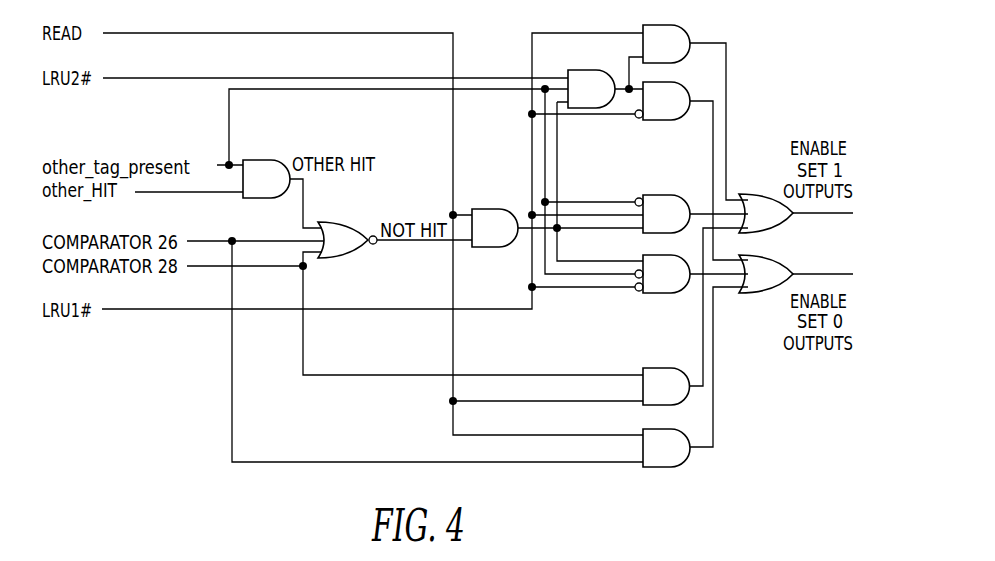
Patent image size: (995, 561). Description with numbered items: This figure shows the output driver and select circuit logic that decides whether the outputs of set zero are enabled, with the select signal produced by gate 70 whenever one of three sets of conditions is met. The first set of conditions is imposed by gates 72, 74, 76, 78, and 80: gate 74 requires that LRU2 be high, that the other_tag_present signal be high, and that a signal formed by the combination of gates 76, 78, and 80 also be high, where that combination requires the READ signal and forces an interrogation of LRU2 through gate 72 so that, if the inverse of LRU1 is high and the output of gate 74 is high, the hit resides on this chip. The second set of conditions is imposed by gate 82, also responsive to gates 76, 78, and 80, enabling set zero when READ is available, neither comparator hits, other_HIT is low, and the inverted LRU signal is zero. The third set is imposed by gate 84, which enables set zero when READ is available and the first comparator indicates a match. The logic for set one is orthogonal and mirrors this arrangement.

The gate 70 is at (770, 294).
The gate 72 is at (677, 82).
The gate 74 is at (602, 70).
The gate 76 is at (482, 208).
The gate 78 is at (343, 259).
The gate 80 is at (258, 160).
The gate 82 is at (663, 294).
The gate 84 is at (667, 468).